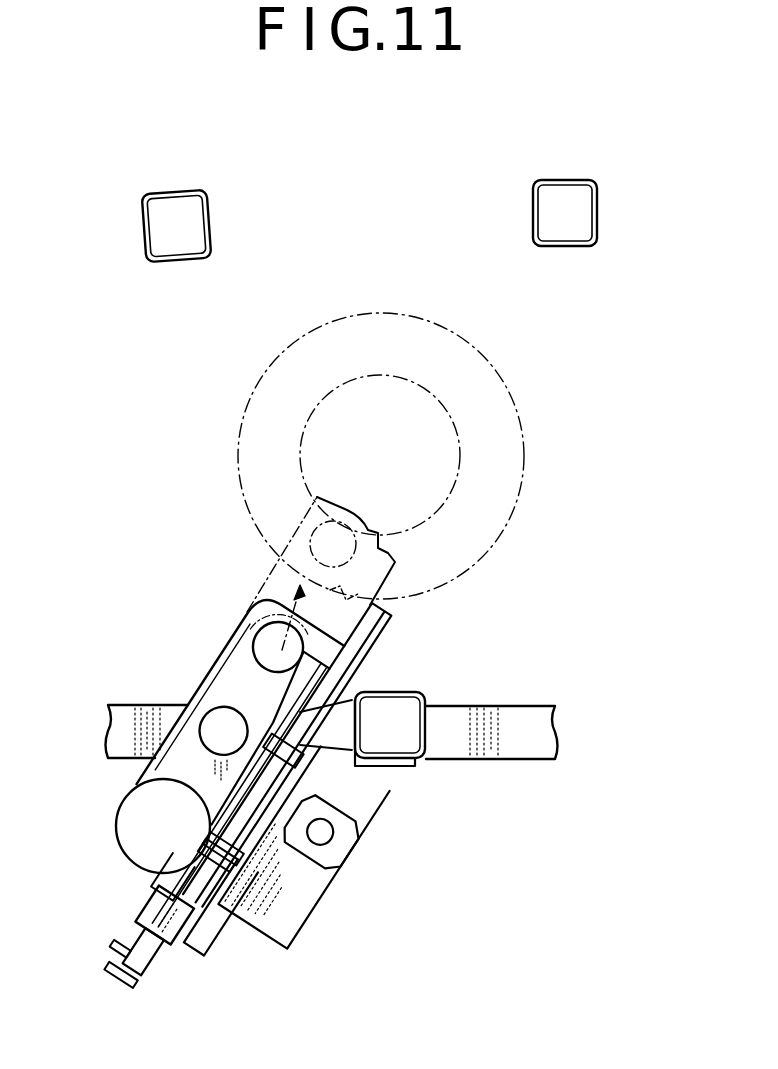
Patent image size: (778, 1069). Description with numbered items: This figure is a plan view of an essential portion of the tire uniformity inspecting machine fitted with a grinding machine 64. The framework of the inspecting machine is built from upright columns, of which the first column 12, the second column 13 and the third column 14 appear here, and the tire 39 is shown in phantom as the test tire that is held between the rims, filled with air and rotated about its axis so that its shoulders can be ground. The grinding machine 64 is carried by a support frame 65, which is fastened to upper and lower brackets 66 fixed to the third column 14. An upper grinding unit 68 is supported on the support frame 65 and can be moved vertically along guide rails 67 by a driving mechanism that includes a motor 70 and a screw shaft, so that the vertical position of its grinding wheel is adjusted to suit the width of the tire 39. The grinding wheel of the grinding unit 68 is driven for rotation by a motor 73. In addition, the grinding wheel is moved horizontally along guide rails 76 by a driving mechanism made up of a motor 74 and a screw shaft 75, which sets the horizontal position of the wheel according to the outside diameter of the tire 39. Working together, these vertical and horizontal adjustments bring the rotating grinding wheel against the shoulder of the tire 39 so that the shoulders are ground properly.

The first column 12 is at (188, 190).
The second column 13 is at (584, 180).
The third column 14 is at (427, 752).
The tire 39 is at (520, 440).
The grinding machine 64 is at (198, 688).
The support frame 65 is at (300, 897).
The brackets 66 is at (385, 762).
The guide rails 67 is at (340, 742).
The upper grinding unit 68 is at (119, 796).
The motor 70 is at (337, 833).
The motor 73 is at (138, 852).
The motor 74 is at (170, 970).
The screw shaft 75 is at (180, 887).
The guide rails 76 is at (362, 655).